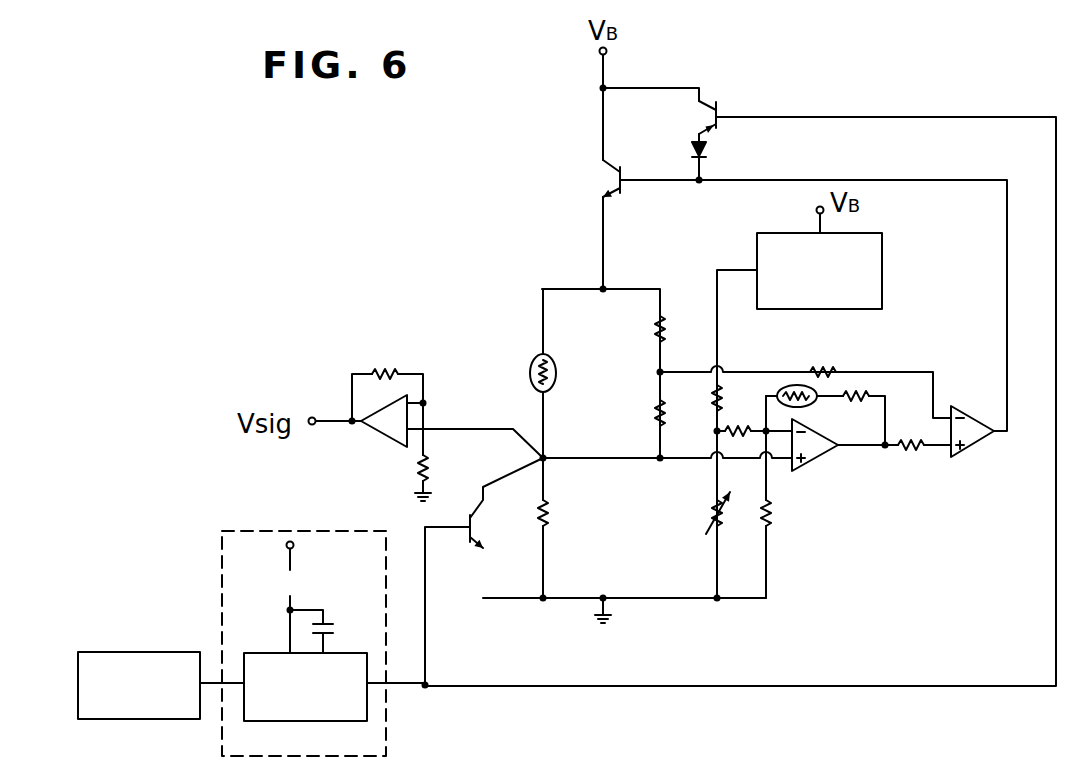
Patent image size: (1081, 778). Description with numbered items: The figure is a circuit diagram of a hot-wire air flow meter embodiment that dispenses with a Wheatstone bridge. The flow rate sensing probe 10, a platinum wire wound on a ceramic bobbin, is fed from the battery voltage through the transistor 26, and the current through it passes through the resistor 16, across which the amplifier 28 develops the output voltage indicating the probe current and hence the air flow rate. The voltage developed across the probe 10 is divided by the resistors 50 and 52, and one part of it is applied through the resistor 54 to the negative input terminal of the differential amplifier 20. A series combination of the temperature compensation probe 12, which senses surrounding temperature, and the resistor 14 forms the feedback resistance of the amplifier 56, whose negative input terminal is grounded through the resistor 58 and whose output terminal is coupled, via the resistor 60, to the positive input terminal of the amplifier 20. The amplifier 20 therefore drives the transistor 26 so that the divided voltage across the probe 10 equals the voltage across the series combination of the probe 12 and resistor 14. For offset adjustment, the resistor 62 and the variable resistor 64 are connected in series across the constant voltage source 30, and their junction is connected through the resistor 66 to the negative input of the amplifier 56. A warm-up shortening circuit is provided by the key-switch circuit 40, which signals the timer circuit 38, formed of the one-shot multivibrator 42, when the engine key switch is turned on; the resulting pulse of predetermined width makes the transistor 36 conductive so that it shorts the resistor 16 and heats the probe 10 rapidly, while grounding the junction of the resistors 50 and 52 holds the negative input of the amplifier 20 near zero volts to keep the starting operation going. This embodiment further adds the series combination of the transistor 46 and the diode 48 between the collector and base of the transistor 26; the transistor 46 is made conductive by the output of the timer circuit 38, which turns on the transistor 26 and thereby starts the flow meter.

The flow rate sensing probe 10 is at (529, 375).
The temperature compensation probe 12 is at (787, 385).
The resistor 14 is at (862, 389).
The resistor 16 is at (549, 518).
The differential amplifier 20 is at (974, 452).
The transistor 26 is at (623, 171).
The amplifier 28 is at (390, 445).
The constant voltage source 30 is at (882, 262).
The transistor 36 is at (466, 545).
The timer circuit 38 is at (222, 588).
The key-switch circuit 40 is at (140, 653).
The one-shot multivibrator 42 is at (305, 721).
The transistor 46 is at (718, 105).
The diode 48 is at (708, 150).
The resistor 50 is at (656, 338).
The resistor 52 is at (656, 413).
The resistor 54 is at (822, 368).
The amplifier 56 is at (812, 471).
The resistor 58 is at (772, 522).
The resistor 60 is at (908, 455).
The resistor 62 is at (712, 405).
The variable resistor 64 is at (708, 518).
The resistor 66 is at (740, 428).